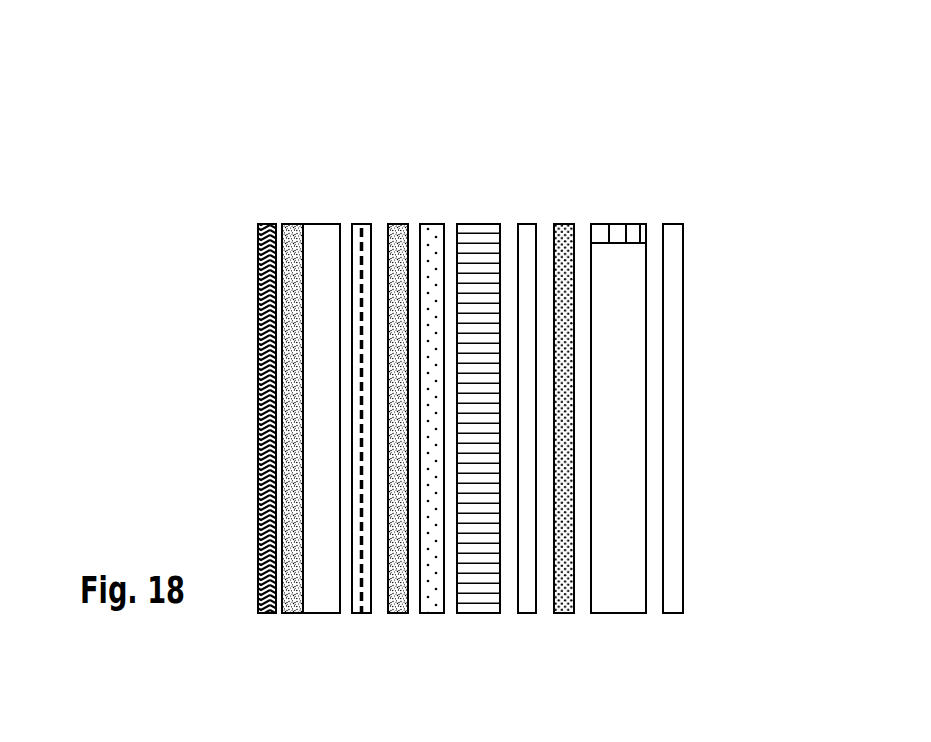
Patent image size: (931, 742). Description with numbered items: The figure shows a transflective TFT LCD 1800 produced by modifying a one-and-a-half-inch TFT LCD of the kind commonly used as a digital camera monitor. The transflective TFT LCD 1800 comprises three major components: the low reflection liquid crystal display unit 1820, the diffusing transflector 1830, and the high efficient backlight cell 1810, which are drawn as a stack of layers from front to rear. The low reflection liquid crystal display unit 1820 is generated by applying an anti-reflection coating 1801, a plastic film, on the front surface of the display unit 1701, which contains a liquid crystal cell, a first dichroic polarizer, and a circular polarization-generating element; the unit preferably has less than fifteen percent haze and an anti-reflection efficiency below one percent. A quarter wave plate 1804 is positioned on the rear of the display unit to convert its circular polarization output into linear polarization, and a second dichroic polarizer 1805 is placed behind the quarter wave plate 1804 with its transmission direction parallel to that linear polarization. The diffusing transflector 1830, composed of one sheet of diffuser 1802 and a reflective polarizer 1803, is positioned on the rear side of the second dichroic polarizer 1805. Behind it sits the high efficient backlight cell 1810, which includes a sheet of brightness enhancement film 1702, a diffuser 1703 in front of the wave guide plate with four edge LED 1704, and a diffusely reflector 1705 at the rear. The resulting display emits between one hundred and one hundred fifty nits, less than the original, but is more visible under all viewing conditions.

The transflective TFT LCD 1800 is at (678, 632).
The low reflection liquid crystal display unit 1820 is at (187, 92).
The diffusing transflector 1830 is at (497, 95).
The high efficient backlight cell 1810 is at (817, 95).
The anti-reflection coating 1801 is at (258, 224).
The display unit 1701 is at (305, 224).
The quarter wave plate 1804 is at (368, 224).
The second dichroic polarizer 1805 is at (395, 224).
The diffuser 1802 is at (423, 224).
The reflective polarizer 1803 is at (458, 224).
The brightness enhancement film 1702 is at (525, 224).
The diffuser 1703 is at (570, 224).
The wave guide plate with four edge LED 1704 is at (625, 224).
The diffusely reflector 1705 is at (680, 224).